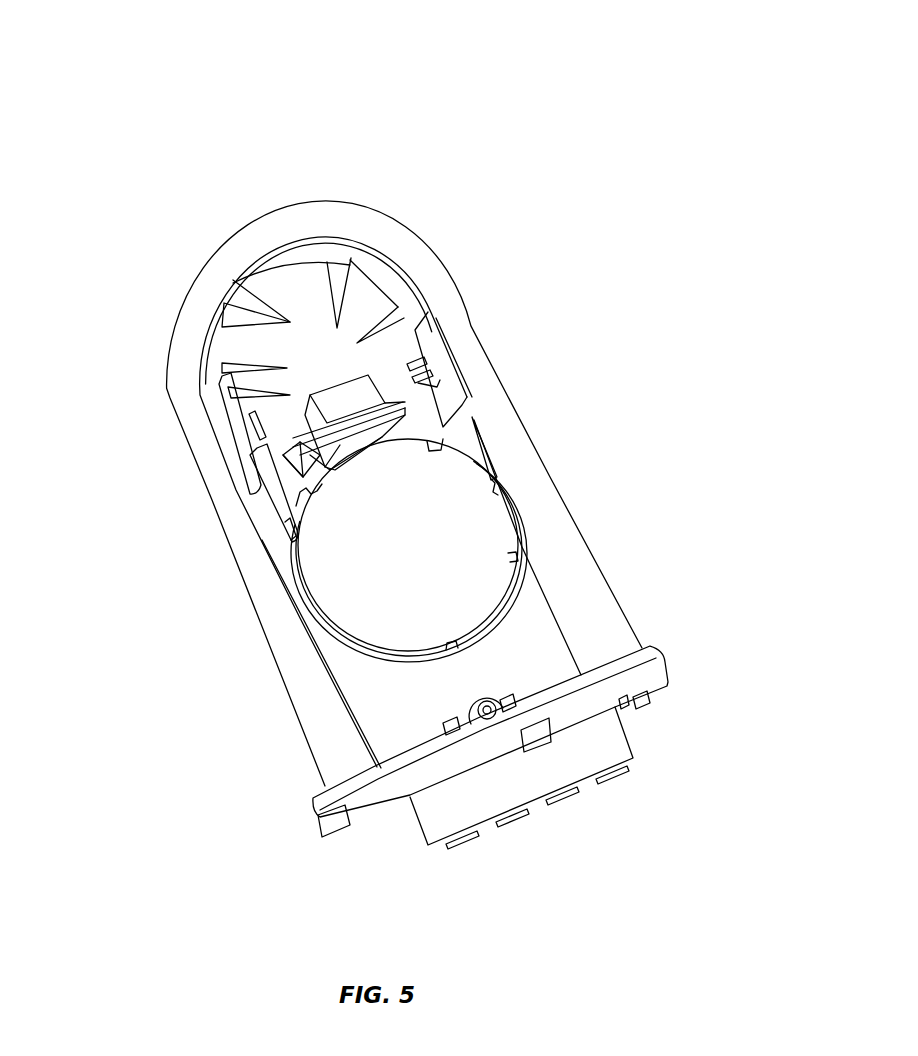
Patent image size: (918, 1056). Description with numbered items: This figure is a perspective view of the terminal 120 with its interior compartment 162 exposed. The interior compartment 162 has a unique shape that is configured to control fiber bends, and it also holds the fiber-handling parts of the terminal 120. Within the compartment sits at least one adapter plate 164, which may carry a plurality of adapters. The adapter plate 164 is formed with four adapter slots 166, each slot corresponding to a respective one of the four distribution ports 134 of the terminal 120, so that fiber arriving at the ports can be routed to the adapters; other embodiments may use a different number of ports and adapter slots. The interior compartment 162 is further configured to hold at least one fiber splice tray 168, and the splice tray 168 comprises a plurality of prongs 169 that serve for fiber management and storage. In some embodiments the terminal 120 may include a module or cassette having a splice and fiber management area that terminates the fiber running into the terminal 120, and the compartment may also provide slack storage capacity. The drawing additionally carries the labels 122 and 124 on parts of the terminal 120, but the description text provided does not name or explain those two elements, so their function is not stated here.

The terminal 120 is at (134, 102).
The housing 122 is at (585, 540).
The base flange 124 is at (660, 673).
The distribution ports 134 is at (560, 793).
The interior compartment 162 is at (403, 353).
The adapter plate 164 is at (330, 408).
The adapter slots 166 is at (393, 441).
The fiber splice tray 168 is at (467, 488).
The prongs 169 is at (237, 287).